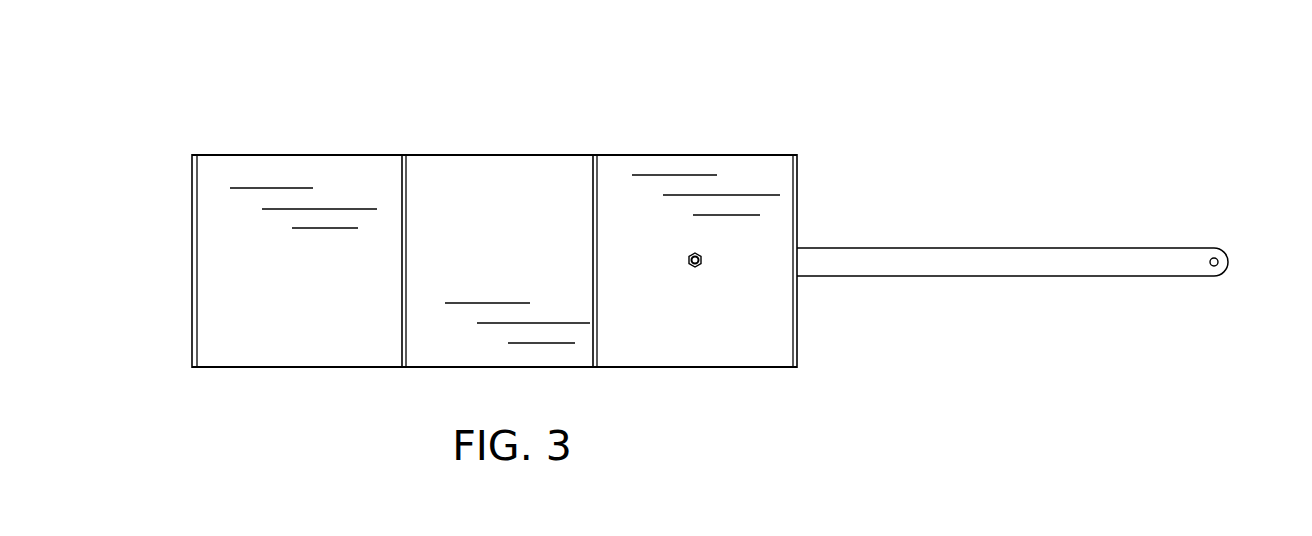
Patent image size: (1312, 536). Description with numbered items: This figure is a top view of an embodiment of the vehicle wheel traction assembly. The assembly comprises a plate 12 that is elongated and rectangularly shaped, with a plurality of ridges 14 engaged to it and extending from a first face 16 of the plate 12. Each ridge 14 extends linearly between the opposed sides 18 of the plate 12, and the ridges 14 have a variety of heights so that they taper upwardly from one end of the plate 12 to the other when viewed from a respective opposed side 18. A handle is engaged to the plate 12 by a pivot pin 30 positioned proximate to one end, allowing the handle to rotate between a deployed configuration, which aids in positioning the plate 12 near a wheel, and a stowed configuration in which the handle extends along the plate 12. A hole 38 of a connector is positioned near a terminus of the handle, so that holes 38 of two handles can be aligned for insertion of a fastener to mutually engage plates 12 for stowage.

The plate 12 is at (351, 368).
The ridges 14 is at (795, 182).
The first face 16 is at (327, 307).
The opposed sides 18 is at (281, 368).
The pivot pin 30 is at (695, 268).
The hole 38 is at (1218, 260).